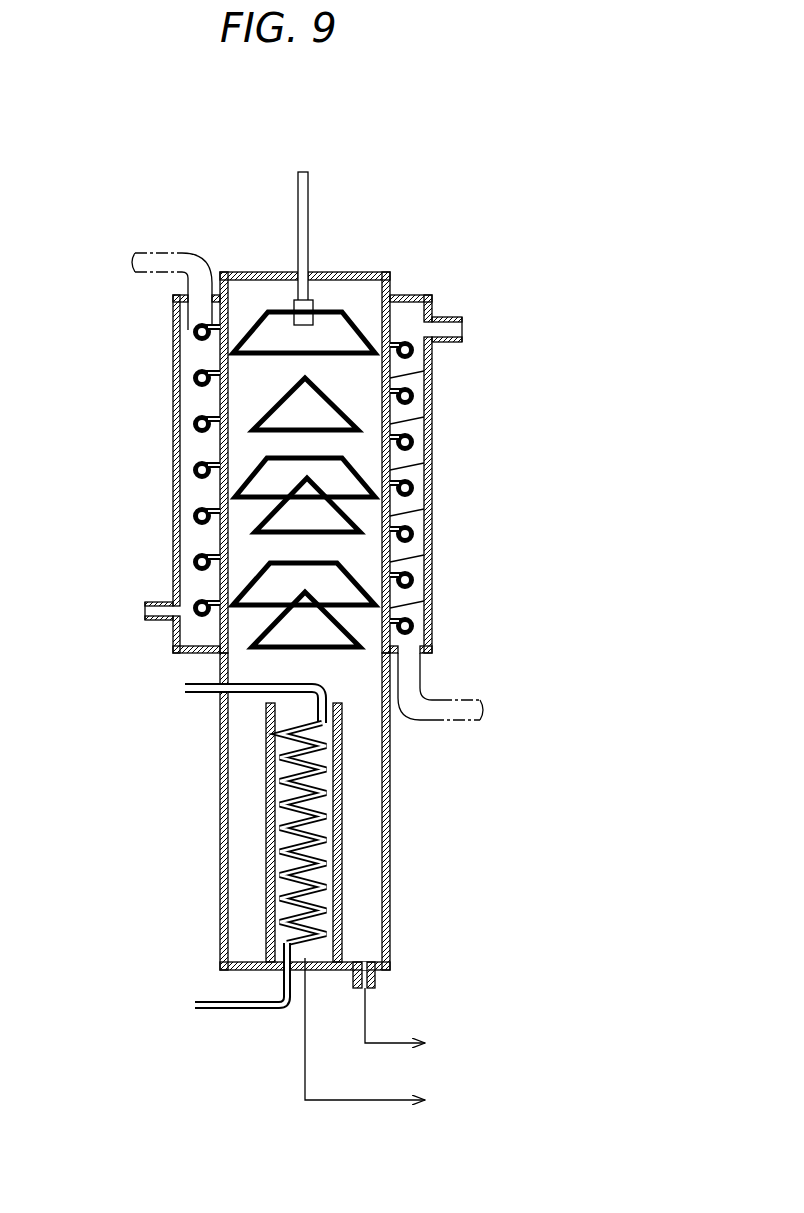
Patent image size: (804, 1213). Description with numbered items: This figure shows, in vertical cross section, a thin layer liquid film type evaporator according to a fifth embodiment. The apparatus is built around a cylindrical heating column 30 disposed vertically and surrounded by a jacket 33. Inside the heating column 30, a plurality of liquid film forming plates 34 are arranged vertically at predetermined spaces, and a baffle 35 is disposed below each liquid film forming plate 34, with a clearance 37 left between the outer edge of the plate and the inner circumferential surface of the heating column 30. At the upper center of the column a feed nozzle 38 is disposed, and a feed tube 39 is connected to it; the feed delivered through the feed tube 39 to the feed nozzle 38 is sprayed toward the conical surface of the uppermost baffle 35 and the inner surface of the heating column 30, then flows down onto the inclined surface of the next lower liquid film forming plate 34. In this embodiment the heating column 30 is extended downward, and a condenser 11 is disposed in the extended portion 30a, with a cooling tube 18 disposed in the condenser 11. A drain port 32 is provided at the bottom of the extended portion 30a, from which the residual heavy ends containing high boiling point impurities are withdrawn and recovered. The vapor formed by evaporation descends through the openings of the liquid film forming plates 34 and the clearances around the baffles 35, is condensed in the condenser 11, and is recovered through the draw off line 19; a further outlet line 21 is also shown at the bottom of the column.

The condenser 11 is at (345, 825).
The cooling tube 18 is at (282, 827).
The draw off line 19 is at (305, 1068).
The outlet line 21 is at (367, 1015).
The heating column 30 is at (396, 469).
The extended portion 30a is at (390, 777).
The drain port 32 is at (375, 978).
The jacket 33 is at (177, 540).
The liquid film forming plate 34 is at (355, 318).
The baffle 35 is at (353, 413).
The clearance 37 is at (388, 368).
The feed nozzle 38 is at (314, 306).
The feed tube 39 is at (307, 196).